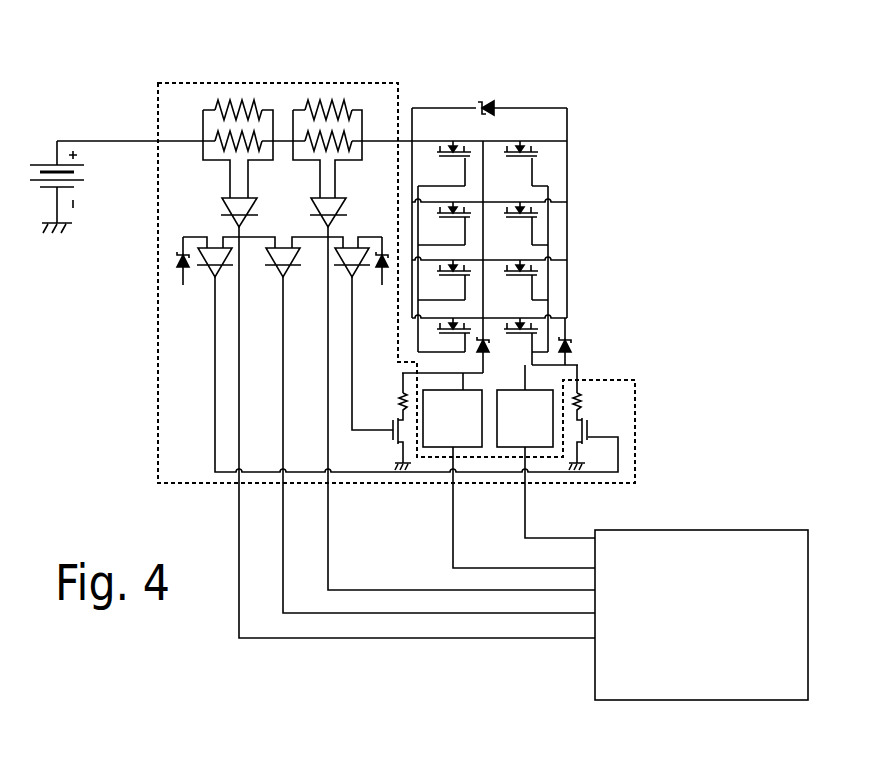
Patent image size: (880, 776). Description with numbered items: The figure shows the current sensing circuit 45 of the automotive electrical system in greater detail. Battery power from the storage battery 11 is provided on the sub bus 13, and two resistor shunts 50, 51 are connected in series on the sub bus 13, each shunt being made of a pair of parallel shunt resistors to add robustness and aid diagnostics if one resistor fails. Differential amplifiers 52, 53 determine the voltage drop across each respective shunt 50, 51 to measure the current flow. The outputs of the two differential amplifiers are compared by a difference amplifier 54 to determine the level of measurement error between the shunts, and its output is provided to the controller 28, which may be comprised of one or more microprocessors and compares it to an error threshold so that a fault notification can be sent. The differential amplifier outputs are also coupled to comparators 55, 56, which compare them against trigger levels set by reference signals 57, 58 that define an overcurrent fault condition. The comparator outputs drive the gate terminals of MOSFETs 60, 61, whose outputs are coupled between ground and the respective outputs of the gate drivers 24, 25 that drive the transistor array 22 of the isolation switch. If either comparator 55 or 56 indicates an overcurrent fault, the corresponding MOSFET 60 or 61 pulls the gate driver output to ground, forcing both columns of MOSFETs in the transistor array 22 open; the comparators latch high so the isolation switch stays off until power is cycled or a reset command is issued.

The storage battery 11 is at (42, 168).
The sub bus 13 is at (401, 140).
The transistor array 22 is at (586, 174).
The gate driver 24 is at (437, 450).
The gate driver 25 is at (508, 450).
The controller 28 is at (722, 529).
The current sensing circuit 45 is at (157, 101).
The resistor shunt 50 is at (228, 91).
The resistor shunt 51 is at (333, 91).
The differential amplifier 52 is at (220, 208).
The differential amplifier 53 is at (310, 208).
The difference amplifier 54 is at (278, 272).
The comparator 55 is at (212, 272).
The comparator 56 is at (355, 272).
The reference signal 57 is at (192, 237).
The reference signal 58 is at (369, 238).
The MOSFET 60 is at (392, 428).
The MOSFET 61 is at (592, 428).